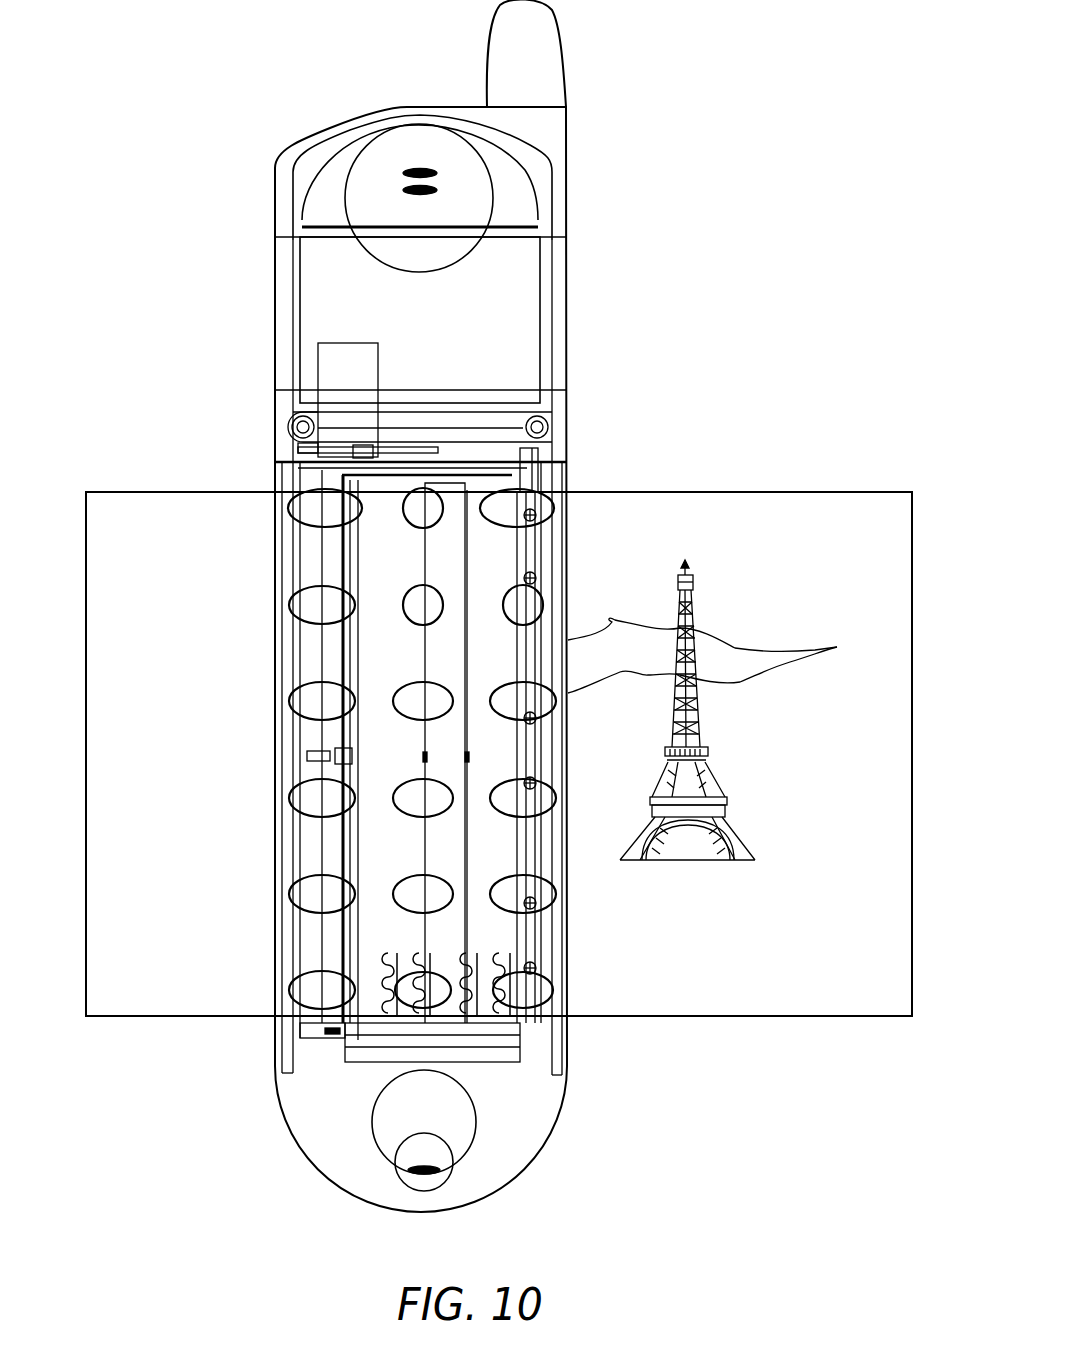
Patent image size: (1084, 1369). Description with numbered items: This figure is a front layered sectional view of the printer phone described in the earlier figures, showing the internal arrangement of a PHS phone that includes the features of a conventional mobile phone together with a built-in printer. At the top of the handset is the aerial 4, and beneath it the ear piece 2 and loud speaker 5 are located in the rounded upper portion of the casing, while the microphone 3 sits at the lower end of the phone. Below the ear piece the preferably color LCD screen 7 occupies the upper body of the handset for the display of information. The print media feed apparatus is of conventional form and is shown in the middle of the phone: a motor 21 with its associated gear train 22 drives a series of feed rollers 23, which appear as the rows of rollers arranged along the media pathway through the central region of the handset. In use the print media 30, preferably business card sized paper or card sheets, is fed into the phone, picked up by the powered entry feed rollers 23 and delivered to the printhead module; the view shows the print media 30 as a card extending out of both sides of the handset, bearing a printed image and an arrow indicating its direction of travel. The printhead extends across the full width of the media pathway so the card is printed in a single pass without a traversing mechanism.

The ear piece 2 is at (473, 195).
The microphone 3 is at (445, 1143).
The aerial 4 is at (558, 52).
The loud speaker 5 is at (490, 157).
The color LCD screen 7 is at (510, 295).
The motor 21 is at (337, 370).
The gear train 22 is at (488, 452).
The feed rollers 23 is at (325, 1040).
The print media 30 is at (787, 942).